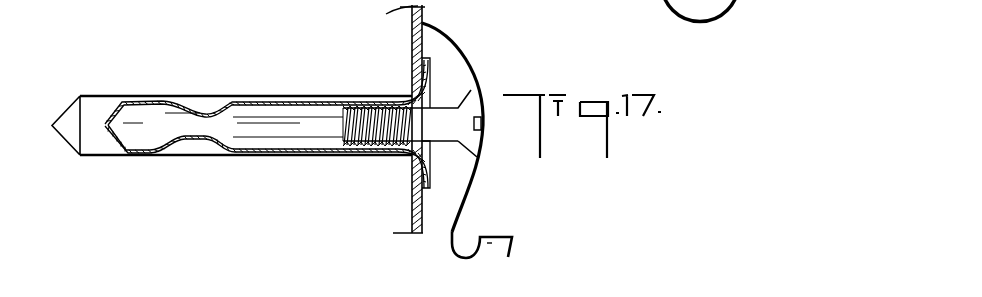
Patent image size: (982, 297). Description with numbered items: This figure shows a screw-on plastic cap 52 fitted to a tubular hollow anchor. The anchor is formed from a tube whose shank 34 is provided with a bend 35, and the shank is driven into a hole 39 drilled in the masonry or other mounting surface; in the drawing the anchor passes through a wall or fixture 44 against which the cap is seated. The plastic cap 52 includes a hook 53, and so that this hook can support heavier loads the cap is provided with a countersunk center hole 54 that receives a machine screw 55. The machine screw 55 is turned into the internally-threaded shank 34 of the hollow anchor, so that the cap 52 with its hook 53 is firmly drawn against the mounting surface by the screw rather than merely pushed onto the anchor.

The shank 34 is at (265, 103).
The bend 35 is at (230, 156).
The hole 39 is at (93, 148).
The wall plate 44 is at (408, 217).
The plastic cap 52 is at (455, 53).
The hook 53 is at (498, 230).
The countersunk center hole 54 is at (465, 93).
The machine screw 55 is at (480, 150).